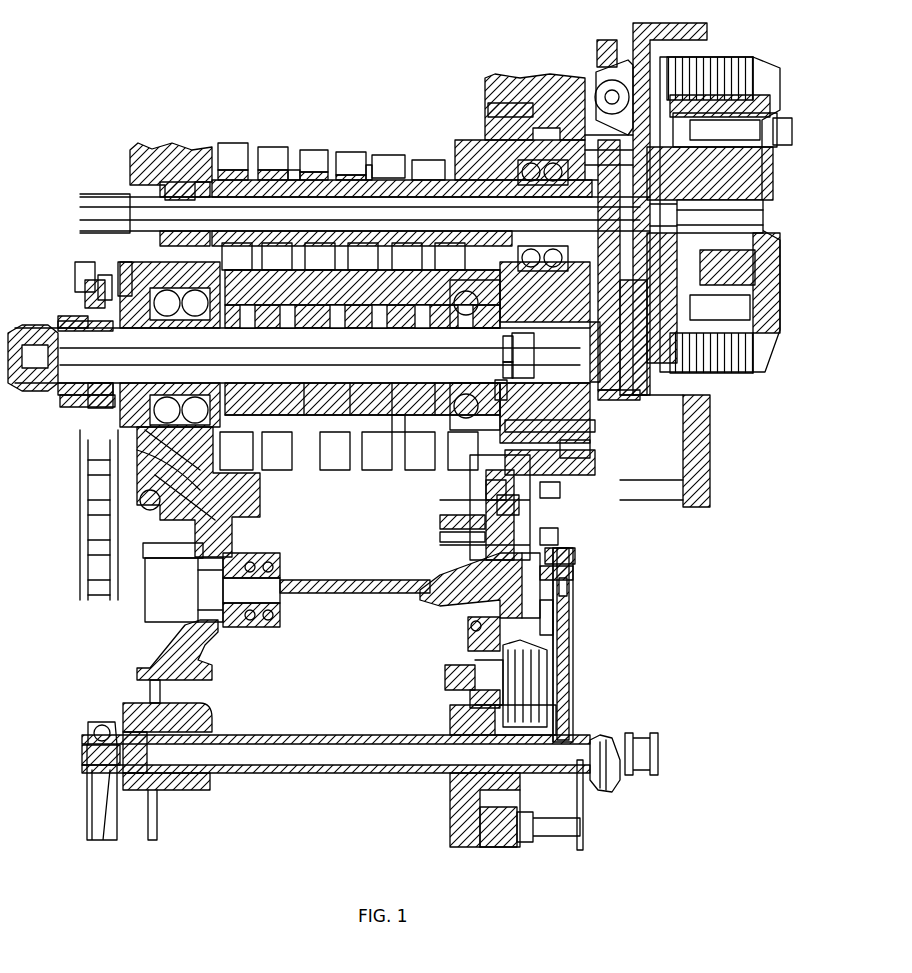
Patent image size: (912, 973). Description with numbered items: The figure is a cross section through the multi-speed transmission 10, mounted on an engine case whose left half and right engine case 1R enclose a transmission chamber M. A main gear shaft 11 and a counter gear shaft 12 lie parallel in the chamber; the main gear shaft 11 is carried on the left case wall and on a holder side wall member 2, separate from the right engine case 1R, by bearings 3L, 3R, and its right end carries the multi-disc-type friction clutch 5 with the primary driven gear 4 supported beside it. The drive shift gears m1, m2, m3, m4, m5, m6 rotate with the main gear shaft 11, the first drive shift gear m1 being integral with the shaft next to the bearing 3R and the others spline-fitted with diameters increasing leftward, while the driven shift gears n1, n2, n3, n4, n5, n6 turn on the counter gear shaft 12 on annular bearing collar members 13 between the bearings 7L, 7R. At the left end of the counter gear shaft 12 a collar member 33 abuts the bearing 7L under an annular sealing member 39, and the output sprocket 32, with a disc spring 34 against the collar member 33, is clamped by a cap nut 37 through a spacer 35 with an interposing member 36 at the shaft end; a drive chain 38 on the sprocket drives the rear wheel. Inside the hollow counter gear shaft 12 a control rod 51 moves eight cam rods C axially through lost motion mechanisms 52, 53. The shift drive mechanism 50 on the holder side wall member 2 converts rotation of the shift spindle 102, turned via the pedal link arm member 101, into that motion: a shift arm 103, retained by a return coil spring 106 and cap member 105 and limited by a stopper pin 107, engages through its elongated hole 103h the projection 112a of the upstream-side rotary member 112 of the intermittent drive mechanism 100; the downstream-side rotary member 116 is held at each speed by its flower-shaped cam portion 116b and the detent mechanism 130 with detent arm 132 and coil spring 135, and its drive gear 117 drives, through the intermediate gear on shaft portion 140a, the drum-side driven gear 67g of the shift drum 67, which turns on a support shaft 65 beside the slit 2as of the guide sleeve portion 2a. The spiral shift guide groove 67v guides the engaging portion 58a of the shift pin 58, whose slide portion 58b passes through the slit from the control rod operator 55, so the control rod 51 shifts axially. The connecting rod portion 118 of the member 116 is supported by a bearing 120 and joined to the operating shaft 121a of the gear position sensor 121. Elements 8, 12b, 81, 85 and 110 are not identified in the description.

The transmission chamber M is at (350, 45).
The right engine case 1R is at (480, 780).
The holder side wall member 2 is at (465, 140).
The guide sleeve portion 2a is at (590, 325).
The slit 2as is at (600, 408).
The left bearing 3L is at (190, 145).
The right bearing 3R is at (518, 168).
The primary driven gear 4 is at (600, 55).
The multi-disc-type friction clutch 5 is at (748, 404).
The left bearing 7L is at (145, 285).
The right bearing 7R is at (520, 257).
The oil passage 8 is at (498, 105).
The multi-speed transmission 10 is at (293, 140).
The main gear shaft 11 is at (370, 152).
The counter gear shaft 12 is at (322, 430).
The output hub 12b is at (160, 485).
The annular bearing collar member 13 is at (412, 418).
The output sprocket 32 is at (75, 290).
The collar member 33 is at (125, 285).
The disc spring 34 is at (100, 290).
The spacer 35 is at (75, 395).
The interposing member 36 is at (52, 382).
The cap nut 37 is at (70, 322).
The drive chain 38 is at (78, 528).
The annular sealing member 39 is at (148, 435).
The shift drive mechanism 50 is at (688, 592).
The control rod 51 is at (58, 322).
The lost motion mechanism 52 is at (175, 500).
The lost motion mechanism 53 is at (394, 430).
The control rod operator 55 is at (512, 339).
The shift pin 58 is at (530, 353).
The engaging portion 58a is at (503, 393).
The slide portion 58b is at (512, 370).
The support shaft 65 is at (585, 450).
The shift drum 67 is at (560, 418).
The drum-side driven gear 67g is at (490, 488).
The shift guide groove 67v is at (548, 489).
The sensor 81 is at (85, 290).
The sensor 85 is at (85, 392).
The intermittent drive mechanism 100 is at (584, 628).
The pedal link arm member 101 is at (87, 799).
The shift spindle 102 is at (320, 774).
The shift arm 103 is at (572, 686).
The elongated hole 103h is at (578, 592).
The cap member 105 is at (645, 773).
The return coil spring 106 is at (600, 786).
The stopper pin 107 is at (556, 832).
The lever 110 is at (552, 624).
The upstream-side rotary member 112 is at (570, 574).
The projection 112a is at (572, 554).
The downstream-side rotary member 116 is at (482, 554).
The flower-shaped cam portion 116b is at (548, 532).
The downstream-member-side drive gear 117 is at (470, 630).
The connecting rod portion 118 is at (338, 594).
The bearing 120 is at (272, 565).
The gear position sensor 121 is at (140, 595).
The operating shaft 121a is at (225, 635).
The detent mechanism 130 is at (555, 656).
The detent arm 132 is at (470, 678).
The coil spring 135 is at (455, 707).
The intermediate shaft portion 140a is at (480, 531).
The first drive shift gear m1 is at (428, 160).
The second drive shift gear m2 is at (390, 155).
The third drive shift gear m3 is at (350, 152).
The fourth drive shift gear m4 is at (314, 150).
The fifth drive shift gear m5 is at (273, 147).
The sixth drive shift gear m6 is at (233, 143).
The driven shift gear n1 is at (450, 450).
The driven shift gear n2 is at (408, 445).
The driven shift gear n3 is at (364, 470).
The driven shift gear n4 is at (322, 440).
The driven shift gear n5 is at (278, 470).
The driven shift gear n6 is at (256, 432).
The cam rod C is at (100, 408).